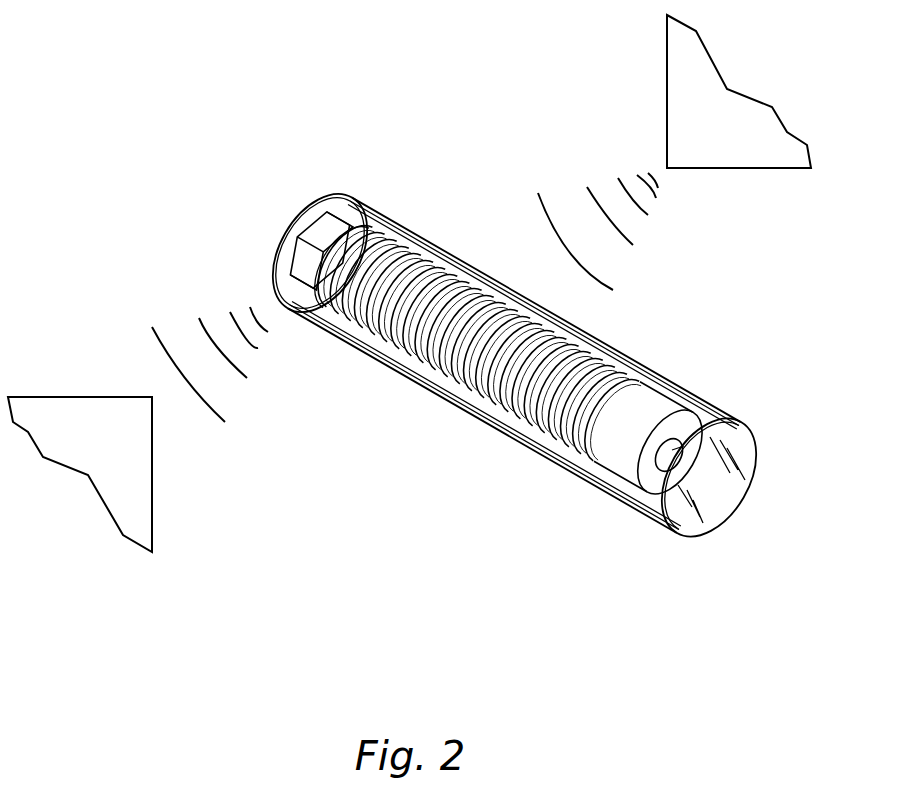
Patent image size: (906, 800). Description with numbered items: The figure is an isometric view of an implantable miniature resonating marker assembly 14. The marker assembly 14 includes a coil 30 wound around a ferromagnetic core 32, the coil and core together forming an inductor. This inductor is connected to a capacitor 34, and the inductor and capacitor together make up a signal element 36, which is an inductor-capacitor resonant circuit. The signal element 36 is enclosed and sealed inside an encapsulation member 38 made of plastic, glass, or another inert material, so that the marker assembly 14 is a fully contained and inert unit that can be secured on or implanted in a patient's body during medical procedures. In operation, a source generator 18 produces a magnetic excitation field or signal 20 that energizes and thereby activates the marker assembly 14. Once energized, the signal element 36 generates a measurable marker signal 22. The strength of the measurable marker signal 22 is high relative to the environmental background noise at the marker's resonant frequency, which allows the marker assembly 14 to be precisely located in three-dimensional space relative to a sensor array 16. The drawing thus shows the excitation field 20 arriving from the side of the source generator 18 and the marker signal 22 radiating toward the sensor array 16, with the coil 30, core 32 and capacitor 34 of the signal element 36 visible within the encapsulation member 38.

The marker assembly 14 is at (502, 183).
The sensor array 16 is at (133, 496).
The source generator 18 is at (680, 84).
The magnetic excitation field or signal 20 is at (627, 237).
The measurable marker signal 22 is at (200, 328).
The coil 30 is at (447, 290).
The ferromagnetic core 32 is at (672, 446).
The capacitor 34 is at (345, 227).
The signal element 36 is at (428, 250).
The encapsulation member 38 is at (600, 340).